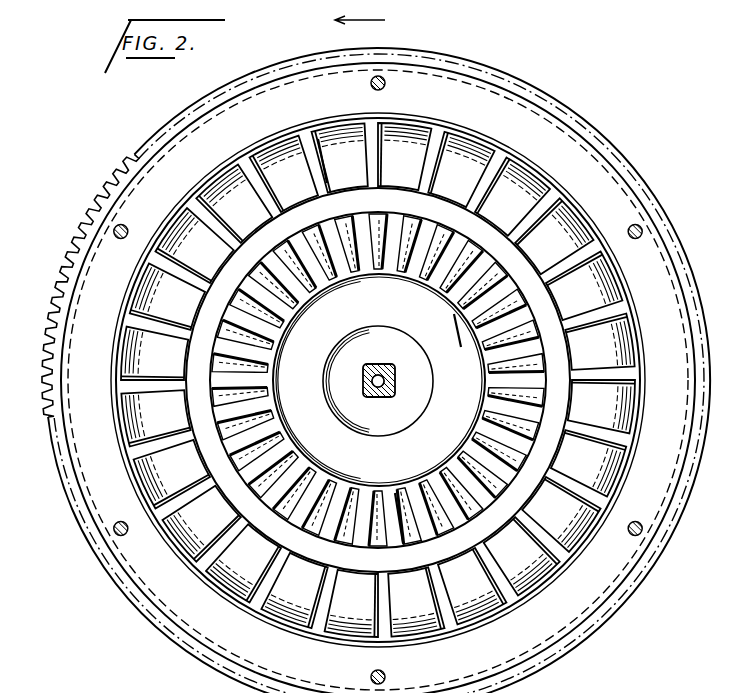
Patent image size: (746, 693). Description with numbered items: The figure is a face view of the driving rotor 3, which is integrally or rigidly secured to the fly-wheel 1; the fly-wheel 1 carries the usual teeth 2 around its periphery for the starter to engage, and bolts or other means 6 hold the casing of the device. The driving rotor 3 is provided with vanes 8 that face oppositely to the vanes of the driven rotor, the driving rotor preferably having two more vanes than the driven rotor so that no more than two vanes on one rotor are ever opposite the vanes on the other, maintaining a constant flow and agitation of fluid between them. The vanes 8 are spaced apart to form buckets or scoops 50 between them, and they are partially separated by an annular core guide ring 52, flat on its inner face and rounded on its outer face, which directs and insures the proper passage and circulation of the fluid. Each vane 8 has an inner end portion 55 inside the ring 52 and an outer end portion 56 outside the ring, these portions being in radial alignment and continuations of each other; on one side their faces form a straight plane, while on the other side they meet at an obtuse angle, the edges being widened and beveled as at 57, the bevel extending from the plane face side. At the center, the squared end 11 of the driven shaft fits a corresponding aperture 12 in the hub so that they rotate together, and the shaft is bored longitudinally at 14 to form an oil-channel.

The fly-wheel 1 is at (93, 318).
The teeth 2 is at (80, 233).
The driving rotor 3 is at (567, 185).
The bolts 6 is at (642, 226).
The vanes 8 is at (375, 130).
The squared end 11 is at (400, 370).
The aperture 12 is at (396, 383).
The oil-channel 14 is at (379, 375).
The buckets 50 is at (622, 393).
The core guide ring 52 is at (545, 455).
The inner end portion 55 is at (332, 530).
The outer end portion 56 is at (383, 621).
The bevel 57 is at (323, 160).